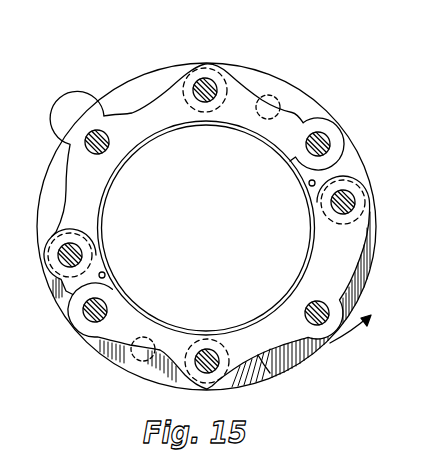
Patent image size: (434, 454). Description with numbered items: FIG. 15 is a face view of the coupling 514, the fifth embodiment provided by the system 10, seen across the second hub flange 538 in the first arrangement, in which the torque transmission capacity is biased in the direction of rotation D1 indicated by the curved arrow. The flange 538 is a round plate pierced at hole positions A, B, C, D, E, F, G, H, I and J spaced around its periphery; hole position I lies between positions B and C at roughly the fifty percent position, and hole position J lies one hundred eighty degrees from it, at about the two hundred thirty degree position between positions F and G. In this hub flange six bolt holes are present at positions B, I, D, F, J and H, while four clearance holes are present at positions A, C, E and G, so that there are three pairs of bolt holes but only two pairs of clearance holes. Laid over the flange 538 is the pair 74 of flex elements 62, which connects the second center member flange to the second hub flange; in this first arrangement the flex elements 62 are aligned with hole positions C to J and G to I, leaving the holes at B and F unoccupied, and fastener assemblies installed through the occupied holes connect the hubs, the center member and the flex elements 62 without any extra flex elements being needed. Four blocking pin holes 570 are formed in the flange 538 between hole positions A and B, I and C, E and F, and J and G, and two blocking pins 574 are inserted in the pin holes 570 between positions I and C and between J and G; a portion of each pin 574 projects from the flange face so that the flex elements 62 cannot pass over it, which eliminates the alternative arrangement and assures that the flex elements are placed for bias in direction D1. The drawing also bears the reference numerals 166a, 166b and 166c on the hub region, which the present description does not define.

The system 10 is at (403, 136).
The flex elements 62 is at (142, 103).
The coupling 514 is at (313, 49).
The second hub flange 538 is at (303, 100).
The pair of flex elements 74 is at (347, 165).
The blocking pin holes 570 is at (241, 125).
The blocking pins 574 is at (309, 185).
The ring portion a 166a is at (87, 201).
The ring portion b 166b is at (157, 124).
The ring portion c 166c is at (271, 127).
The hole position A is at (207, 88).
The hole position B is at (266, 106).
The hole position C is at (345, 203).
The hole position D is at (320, 313).
The hole position E is at (208, 358).
The hole position F is at (142, 351).
The hole position G is at (73, 254).
The hole position H is at (94, 142).
The hole position I is at (320, 143).
The hole position J is at (93, 313).
The direction of rotation D1 is at (344, 345).